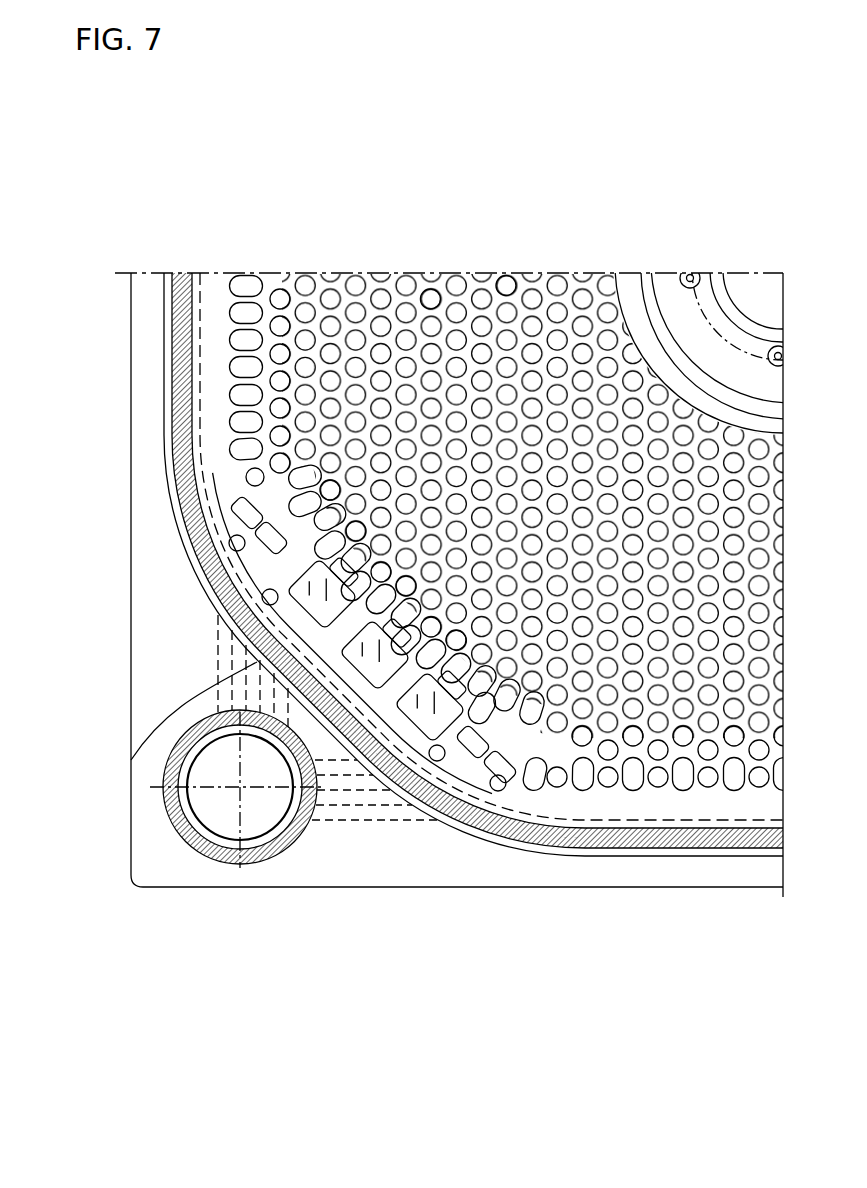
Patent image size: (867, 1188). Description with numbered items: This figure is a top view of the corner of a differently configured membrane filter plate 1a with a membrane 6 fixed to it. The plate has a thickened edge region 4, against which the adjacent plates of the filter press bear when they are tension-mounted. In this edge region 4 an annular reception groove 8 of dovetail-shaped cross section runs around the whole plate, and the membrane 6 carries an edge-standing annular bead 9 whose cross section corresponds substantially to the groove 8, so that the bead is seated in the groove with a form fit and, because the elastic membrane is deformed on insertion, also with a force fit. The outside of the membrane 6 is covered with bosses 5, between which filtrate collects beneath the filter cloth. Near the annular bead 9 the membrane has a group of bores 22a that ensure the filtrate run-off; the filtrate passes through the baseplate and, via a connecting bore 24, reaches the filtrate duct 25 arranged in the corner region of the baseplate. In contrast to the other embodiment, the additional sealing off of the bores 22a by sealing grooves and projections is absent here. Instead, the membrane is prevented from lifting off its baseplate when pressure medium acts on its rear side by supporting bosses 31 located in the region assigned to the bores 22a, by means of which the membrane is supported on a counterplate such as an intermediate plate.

The membrane filter plate 1a is at (283, 243).
The thickened edge region 4 is at (721, 873).
The bosses 5 is at (429, 296).
The membrane 6 is at (511, 285).
The groove 8 is at (199, 275).
The annular bead 9 is at (178, 272).
The bores 22a is at (234, 541).
The connecting bore 24 is at (214, 697).
The filtrate duct 25 is at (218, 812).
The supporting bosses 31 is at (318, 612).